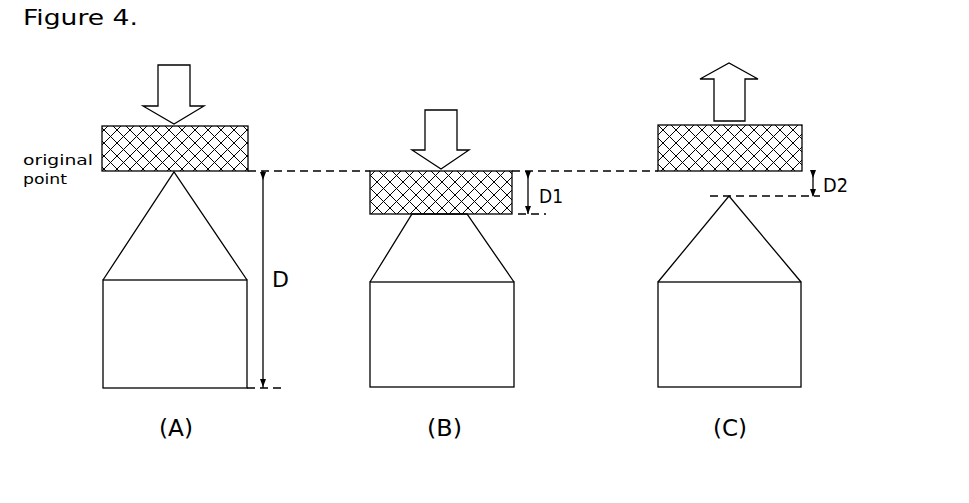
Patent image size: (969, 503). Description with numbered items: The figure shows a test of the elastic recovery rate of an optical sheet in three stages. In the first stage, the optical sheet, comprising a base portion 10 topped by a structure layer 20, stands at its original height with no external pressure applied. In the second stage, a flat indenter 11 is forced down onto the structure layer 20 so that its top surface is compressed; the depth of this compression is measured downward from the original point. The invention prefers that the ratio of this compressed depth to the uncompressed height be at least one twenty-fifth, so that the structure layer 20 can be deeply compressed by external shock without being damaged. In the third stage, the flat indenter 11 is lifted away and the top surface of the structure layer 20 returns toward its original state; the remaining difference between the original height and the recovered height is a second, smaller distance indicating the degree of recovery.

The body of pressing member 10 is at (108, 338).
The structure layer 20 is at (130, 244).
The flat indenter 11 is at (665, 149).